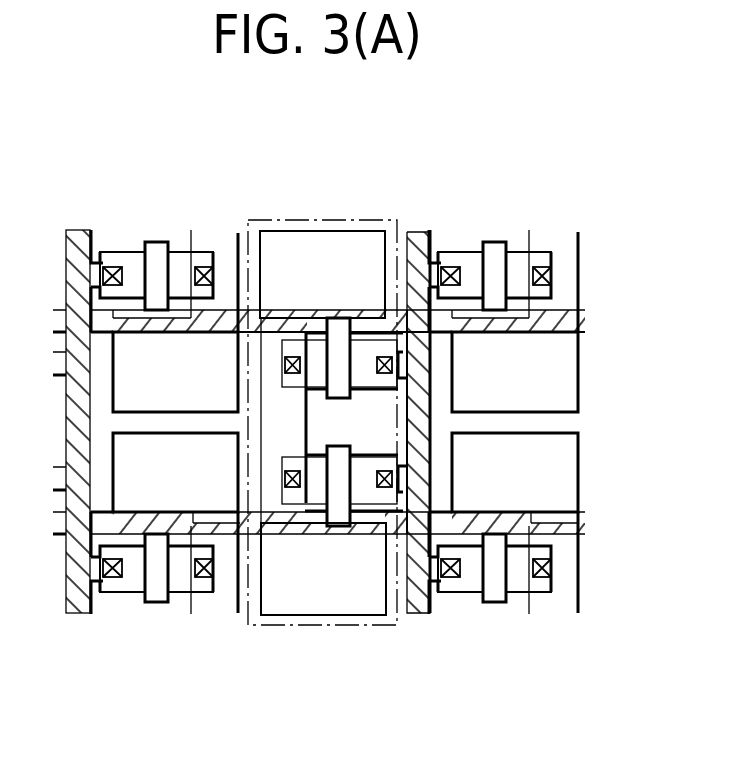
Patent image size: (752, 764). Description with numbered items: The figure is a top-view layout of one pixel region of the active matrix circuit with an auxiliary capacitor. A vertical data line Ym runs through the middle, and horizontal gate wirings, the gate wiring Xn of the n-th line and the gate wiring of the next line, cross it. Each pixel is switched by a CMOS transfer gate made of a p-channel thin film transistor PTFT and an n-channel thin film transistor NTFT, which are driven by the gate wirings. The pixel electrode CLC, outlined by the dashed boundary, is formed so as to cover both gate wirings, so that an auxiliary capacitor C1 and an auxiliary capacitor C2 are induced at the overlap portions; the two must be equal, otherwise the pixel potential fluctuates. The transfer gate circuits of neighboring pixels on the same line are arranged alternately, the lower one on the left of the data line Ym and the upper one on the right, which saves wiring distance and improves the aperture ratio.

The p-channel thin film transistor PTFT is at (157, 260).
The n-channel thin film transistor NTFT is at (160, 585).
The pixel electrode CLC is at (306, 249).
The auxiliary capacitor C1 is at (313, 528).
The auxiliary capacitor C2 is at (325, 313).
The data line Ym is at (420, 234).
The gate wiring Xn is at (580, 320).